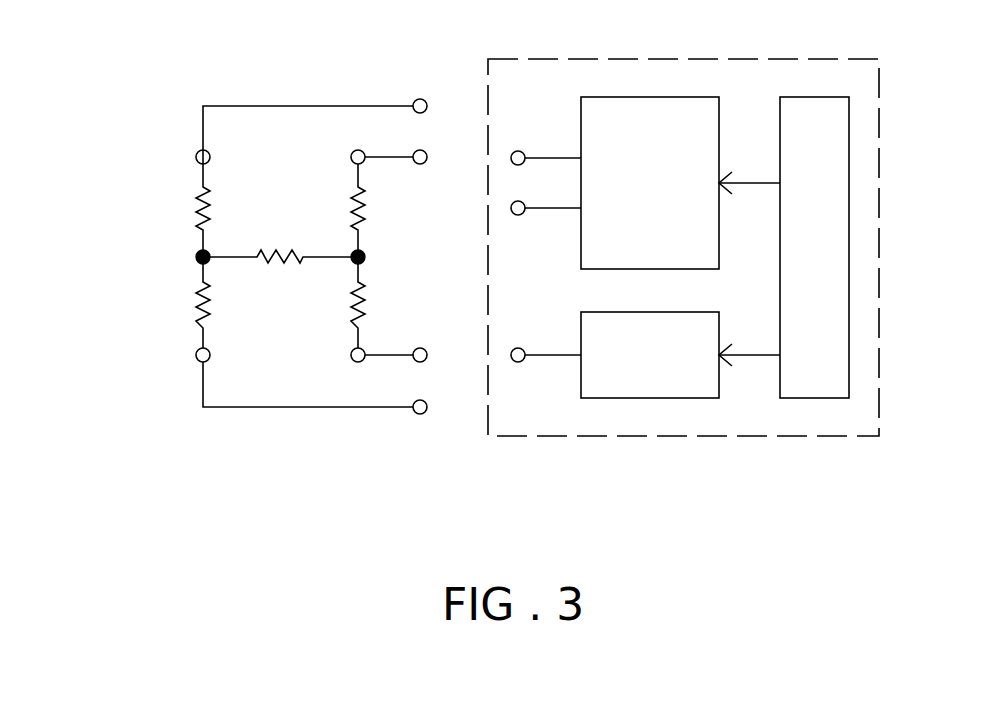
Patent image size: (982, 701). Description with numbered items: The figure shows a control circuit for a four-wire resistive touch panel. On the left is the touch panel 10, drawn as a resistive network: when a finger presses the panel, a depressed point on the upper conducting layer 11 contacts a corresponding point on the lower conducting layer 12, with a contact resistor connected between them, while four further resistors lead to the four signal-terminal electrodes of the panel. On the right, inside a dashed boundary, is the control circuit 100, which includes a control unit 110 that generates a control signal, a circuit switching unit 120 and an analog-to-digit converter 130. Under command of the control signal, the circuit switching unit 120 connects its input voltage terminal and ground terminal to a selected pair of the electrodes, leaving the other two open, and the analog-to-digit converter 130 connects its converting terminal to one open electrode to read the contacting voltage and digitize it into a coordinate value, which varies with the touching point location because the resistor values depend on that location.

The touch panel 10 is at (231, 48).
The upper conducting layer 11 is at (203, 387).
The lower conducting layer 12 is at (358, 341).
The control circuit 100 is at (879, 150).
The control unit 110 is at (795, 262).
The circuit switching unit 120 is at (630, 197).
The analog-to-digit converter 130 is at (630, 372).